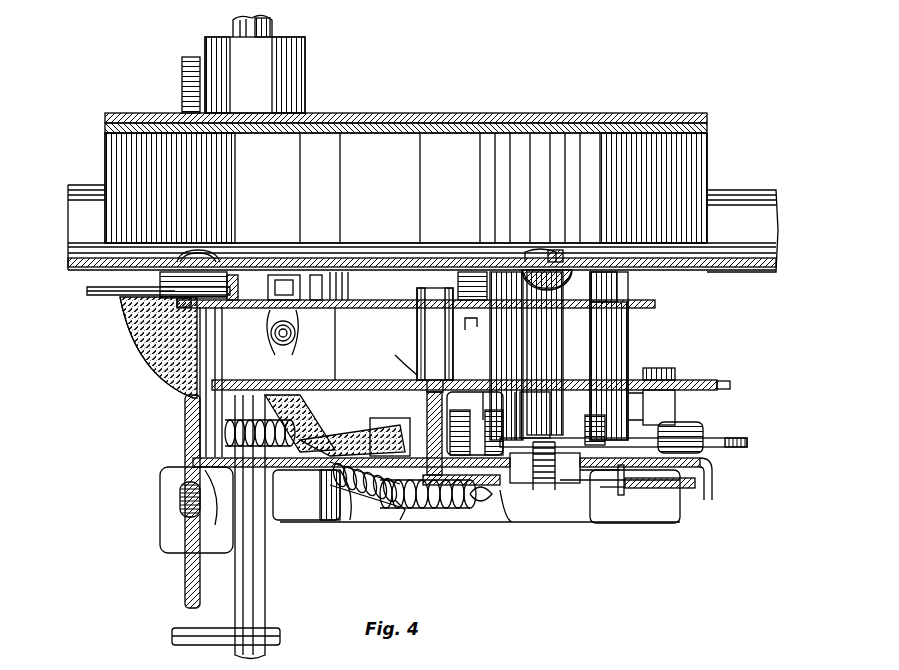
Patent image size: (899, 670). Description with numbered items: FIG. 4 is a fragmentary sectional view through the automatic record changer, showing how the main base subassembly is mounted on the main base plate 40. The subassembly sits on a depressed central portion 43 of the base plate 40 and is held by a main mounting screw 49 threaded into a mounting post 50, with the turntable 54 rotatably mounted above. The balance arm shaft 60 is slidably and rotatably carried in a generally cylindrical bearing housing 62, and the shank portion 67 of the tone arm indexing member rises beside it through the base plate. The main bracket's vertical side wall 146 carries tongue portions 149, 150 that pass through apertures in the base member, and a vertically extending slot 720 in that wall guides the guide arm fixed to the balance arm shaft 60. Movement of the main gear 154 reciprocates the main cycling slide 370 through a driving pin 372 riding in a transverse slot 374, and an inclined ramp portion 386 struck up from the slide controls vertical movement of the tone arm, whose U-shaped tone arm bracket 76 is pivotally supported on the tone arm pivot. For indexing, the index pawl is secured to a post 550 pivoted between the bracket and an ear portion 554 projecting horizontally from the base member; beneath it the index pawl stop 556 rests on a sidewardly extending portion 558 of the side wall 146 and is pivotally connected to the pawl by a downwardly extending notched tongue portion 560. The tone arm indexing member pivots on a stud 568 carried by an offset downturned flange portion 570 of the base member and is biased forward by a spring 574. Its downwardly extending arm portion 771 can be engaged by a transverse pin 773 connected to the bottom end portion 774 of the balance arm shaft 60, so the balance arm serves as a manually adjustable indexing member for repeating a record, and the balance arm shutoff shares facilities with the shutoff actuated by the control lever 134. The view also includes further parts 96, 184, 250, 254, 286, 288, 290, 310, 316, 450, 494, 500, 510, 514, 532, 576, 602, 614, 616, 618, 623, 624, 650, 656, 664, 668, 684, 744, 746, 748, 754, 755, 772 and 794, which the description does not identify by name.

The main base plate 40 is at (756, 192).
The depressed central portion 43 is at (765, 266).
The main mounting screw 49 is at (550, 250).
The mounting post 50 is at (566, 278).
The turntable 54 is at (707, 130).
The balance arm shaft 60 is at (238, 24).
The bearing housing 62 is at (305, 70).
The shank portion 67 is at (182, 60).
The tone arm bracket 76 is at (641, 329).
The body 96 is at (695, 158).
The control lever 134 is at (755, 443).
The vertical wall portion 146 is at (605, 280).
The tongue portion 149 is at (430, 508).
The tongue portion 150 is at (296, 520).
The main gear 154 is at (722, 380).
The plate 184 is at (732, 386).
The bracket hook 250 is at (712, 460).
The block 254 is at (690, 428).
The rod 286 is at (618, 472).
The bracket 288 is at (635, 496).
The link 290 is at (395, 505).
The plate 310 is at (696, 483).
The pin 316 is at (622, 496).
The main cycling slide 370 is at (655, 304).
The driving pin 372 is at (432, 288).
The transverse slot 374 is at (385, 315).
The inclined ramp portion 386 is at (470, 272).
The housing 450 is at (448, 406).
The block 494 is at (663, 368).
The block 500 is at (650, 402).
The cylinder 510 is at (515, 300).
The cylinder 514 is at (553, 300).
The bracket 532 is at (466, 332).
The post 550 is at (175, 383).
The ear portion 554 is at (192, 461).
The index pawl stop 556 is at (90, 293).
The sidewardly extending portion 558 is at (122, 303).
The notched tongue portion 560 is at (130, 290).
The stud 568 is at (178, 497).
The offset downturned flange portion 570 is at (176, 510).
The spring 574 is at (280, 423).
The block 576 is at (287, 275).
The spring 602 is at (378, 500).
The lever 614 is at (396, 356).
The rod 616 is at (396, 420).
The rod 618 is at (483, 388).
The housing 623 is at (512, 520).
The spring 624 is at (455, 510).
The wedge 650 is at (150, 348).
The arm 656 is at (340, 520).
The block 664 is at (183, 308).
The arm 668 is at (355, 437).
The spring 684 is at (368, 392).
The vertically extending slot 720 is at (318, 275).
The rod 744 is at (515, 395).
The block 746 is at (590, 428).
The spring 748 is at (545, 470).
The rod 754 is at (558, 485).
The rod 755 is at (590, 473).
The downwardly extending arm portion 771 is at (185, 576).
The rod 772 is at (537, 415).
The transverse pin 773 is at (176, 640).
The bottom end portion 774 is at (266, 597).
The post 794 is at (232, 275).